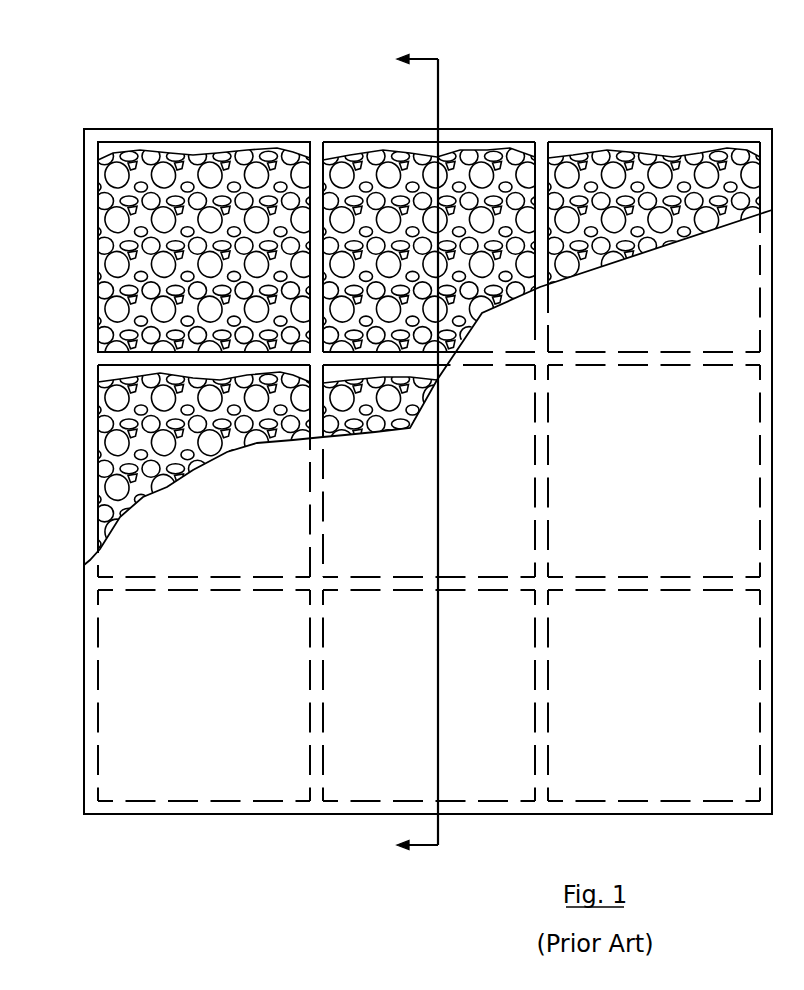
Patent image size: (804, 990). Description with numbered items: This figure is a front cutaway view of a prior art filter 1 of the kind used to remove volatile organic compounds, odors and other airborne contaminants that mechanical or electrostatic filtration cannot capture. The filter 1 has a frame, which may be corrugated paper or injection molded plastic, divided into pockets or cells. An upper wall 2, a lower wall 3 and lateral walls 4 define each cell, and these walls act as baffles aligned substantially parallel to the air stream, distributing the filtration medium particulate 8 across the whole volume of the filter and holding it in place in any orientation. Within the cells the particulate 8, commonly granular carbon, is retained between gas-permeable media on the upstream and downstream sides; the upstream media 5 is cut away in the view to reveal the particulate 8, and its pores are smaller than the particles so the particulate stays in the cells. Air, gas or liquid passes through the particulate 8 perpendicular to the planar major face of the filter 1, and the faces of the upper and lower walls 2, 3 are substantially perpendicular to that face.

The filter 1 is at (708, 84).
The upper wall 2 is at (218, 133).
The lower wall 3 is at (138, 357).
The lateral walls 4 is at (90, 218).
The upstream gas-permeable media 5 is at (118, 551).
The filtration medium particulate 8 is at (158, 174).